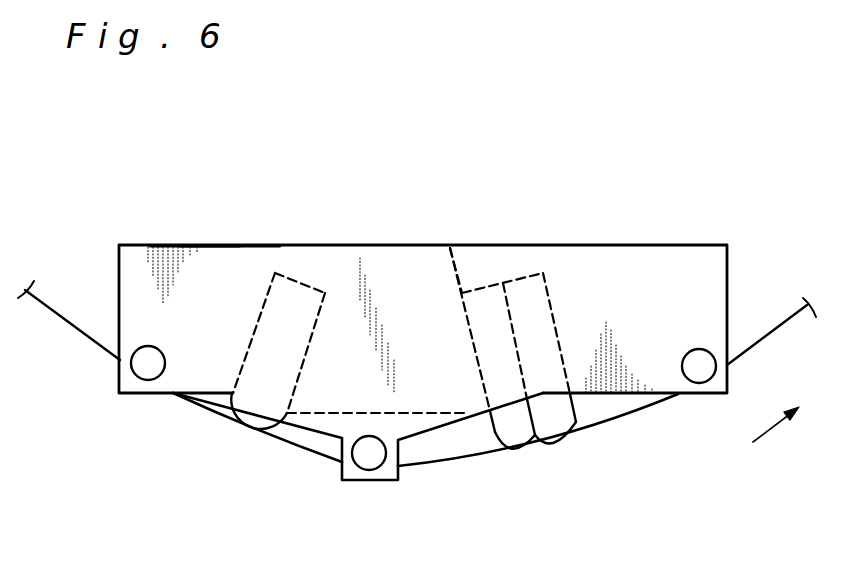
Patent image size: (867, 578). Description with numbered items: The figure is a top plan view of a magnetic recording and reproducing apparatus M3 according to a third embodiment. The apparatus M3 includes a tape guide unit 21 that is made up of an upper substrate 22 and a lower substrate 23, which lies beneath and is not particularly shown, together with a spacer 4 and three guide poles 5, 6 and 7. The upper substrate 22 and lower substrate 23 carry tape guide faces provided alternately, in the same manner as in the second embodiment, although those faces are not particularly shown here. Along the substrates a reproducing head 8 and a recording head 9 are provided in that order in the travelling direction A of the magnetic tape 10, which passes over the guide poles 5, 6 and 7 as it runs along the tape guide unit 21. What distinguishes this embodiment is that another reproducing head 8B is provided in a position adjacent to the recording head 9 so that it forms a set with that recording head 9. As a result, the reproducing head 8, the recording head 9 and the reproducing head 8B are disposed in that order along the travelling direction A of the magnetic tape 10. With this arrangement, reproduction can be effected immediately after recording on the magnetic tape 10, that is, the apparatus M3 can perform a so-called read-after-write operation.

The magnetic recording and reproducing apparatus M3 is at (562, 119).
The tape guide unit 21 is at (554, 247).
The upper substrate 22 is at (207, 251).
The lower substrate 23 is at (241, 193).
The spacer 4 is at (460, 278).
The guide pole 5 is at (149, 368).
The guide pole 6 is at (370, 460).
The guide pole 7 is at (702, 372).
The reproducing head 8 is at (255, 423).
The reproducing head 8B is at (566, 423).
The recording head 9 is at (520, 438).
The magnetic tape 10 is at (772, 338).
The travelling direction A is at (777, 437).